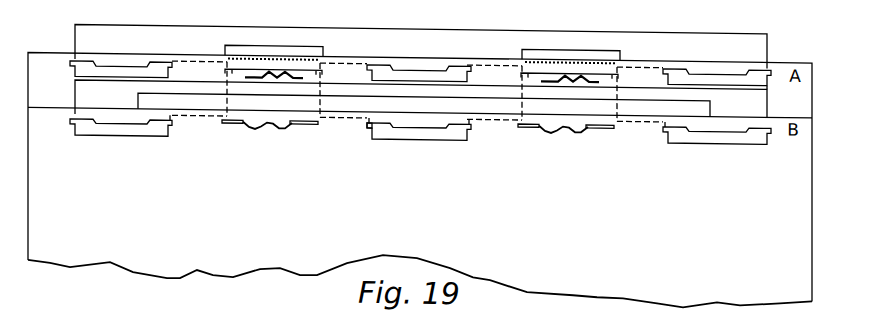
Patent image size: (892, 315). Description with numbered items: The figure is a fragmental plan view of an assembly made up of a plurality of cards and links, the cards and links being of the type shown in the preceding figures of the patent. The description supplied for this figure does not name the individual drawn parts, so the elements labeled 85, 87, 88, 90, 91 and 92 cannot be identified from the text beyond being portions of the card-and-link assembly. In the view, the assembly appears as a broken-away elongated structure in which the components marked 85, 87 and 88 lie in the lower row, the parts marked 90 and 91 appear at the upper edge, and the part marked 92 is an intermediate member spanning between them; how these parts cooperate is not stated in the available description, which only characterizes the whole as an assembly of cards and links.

The lower channel member 85 is at (430, 134).
The joint between corrugated plate and channel member 87 is at (318, 117).
The corrugated plate 88 is at (280, 122).
The upper cover box 90 is at (268, 42).
The upper cover box 91 is at (573, 42).
The intermediate plate 92 is at (138, 98).